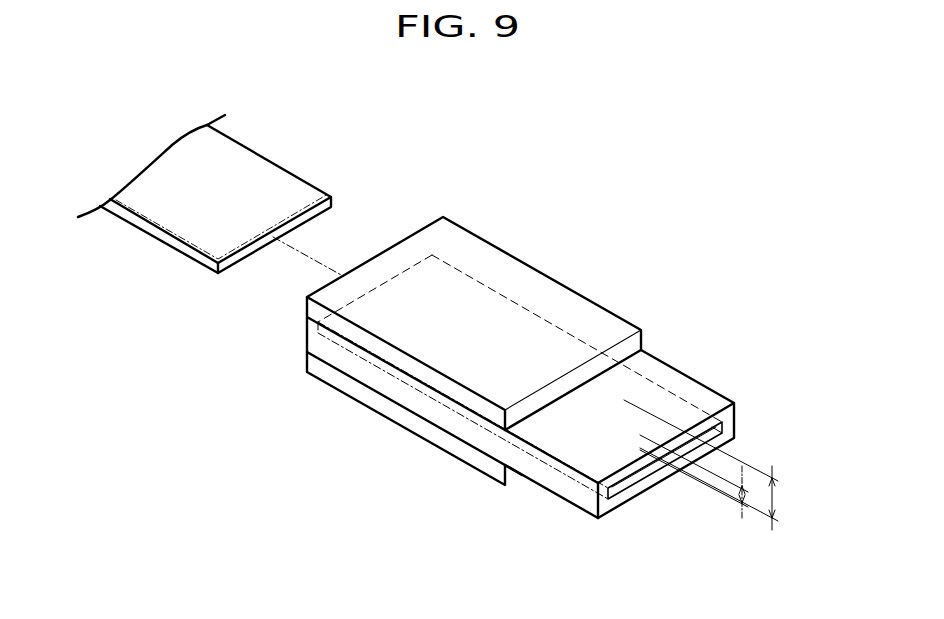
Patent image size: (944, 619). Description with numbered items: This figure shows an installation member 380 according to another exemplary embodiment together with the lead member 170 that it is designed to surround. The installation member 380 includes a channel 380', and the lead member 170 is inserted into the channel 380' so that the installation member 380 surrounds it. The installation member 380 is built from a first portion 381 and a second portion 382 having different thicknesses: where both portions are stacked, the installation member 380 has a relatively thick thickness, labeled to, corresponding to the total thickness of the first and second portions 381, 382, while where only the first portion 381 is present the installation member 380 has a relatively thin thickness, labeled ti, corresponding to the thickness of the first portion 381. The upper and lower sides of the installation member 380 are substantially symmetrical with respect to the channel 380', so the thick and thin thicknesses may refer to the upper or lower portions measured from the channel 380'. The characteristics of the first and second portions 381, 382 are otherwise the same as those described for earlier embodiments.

The lead member 170 is at (262, 168).
The installation member 380 is at (542, 389).
The first portion 381 is at (542, 431).
The second portion 382 is at (573, 293).
The channel 380' is at (665, 491).